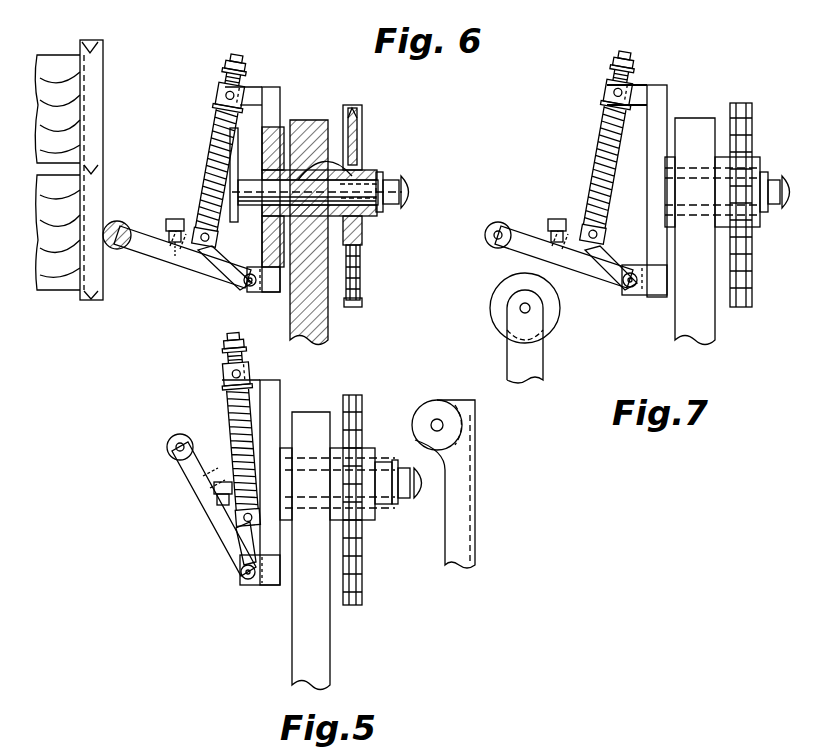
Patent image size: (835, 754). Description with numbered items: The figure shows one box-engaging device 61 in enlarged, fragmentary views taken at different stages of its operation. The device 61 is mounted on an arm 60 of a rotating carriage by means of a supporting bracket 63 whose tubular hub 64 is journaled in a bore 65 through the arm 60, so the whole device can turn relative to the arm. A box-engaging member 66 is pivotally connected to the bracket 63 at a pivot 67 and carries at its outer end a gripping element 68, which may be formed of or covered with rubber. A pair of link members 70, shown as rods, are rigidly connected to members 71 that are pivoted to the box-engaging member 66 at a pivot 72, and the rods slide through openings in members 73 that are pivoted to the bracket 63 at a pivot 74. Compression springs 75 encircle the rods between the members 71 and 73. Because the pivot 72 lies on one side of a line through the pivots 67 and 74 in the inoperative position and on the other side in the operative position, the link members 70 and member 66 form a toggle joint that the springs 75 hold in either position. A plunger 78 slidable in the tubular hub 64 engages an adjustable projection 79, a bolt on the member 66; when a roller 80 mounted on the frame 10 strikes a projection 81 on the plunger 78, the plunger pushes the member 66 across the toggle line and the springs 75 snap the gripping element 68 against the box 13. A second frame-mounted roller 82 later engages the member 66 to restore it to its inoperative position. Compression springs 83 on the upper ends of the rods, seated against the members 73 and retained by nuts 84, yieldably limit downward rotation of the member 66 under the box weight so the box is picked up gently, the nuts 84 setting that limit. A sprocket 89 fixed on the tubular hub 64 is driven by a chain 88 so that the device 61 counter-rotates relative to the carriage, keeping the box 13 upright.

In FIG. 7, the frame 10 is at (500, 345).
In FIG. 5, the frame 10 is at (478, 482).
In FIG. 6, the box 13 is at (93, 110).
In FIG. 6, the arm 60 is at (330, 338).
In FIG. 7, the arm 60 is at (680, 340).
In FIG. 5, the arm 60 is at (332, 648).
In FIG. 6, the box-engaging device 61 is at (316, 98).
In FIG. 7, the box-engaging device 61 is at (674, 96).
In FIG. 5, the box-engaging device 61 is at (246, 592).
In FIG. 6, the supporting bracket 63 is at (280, 103).
In FIG. 7, the supporting bracket 63 is at (660, 103).
In FIG. 5, the supporting bracket 63 is at (280, 396).
In FIG. 6, the tubular hub 64 is at (352, 150).
In FIG. 6, the bore 65 is at (362, 232).
In FIG. 6, the box-engaging member 66 is at (182, 257).
In FIG. 7, the box-engaging member 66 is at (608, 280).
In FIG. 5, the box-engaging member 66 is at (205, 512).
In FIG. 6, the pivot 67 is at (250, 292).
In FIG. 7, the pivot 67 is at (628, 296).
In FIG. 5, the pivot 67 is at (244, 586).
In FIG. 6, the gripping element 68 is at (117, 249).
In FIG. 7, the gripping element 68 is at (492, 247).
In FIG. 5, the gripping element 68 is at (167, 445).
In FIG. 6, the link member 70 is at (236, 58).
In FIG. 7, the link member 70 is at (624, 55).
In FIG. 5, the link member 70 is at (233, 337).
In FIG. 6, the member 71 is at (205, 237).
In FIG. 7, the member 71 is at (593, 234).
In FIG. 5, the member 71 is at (247, 517).
In FIG. 6, the pivot 72 is at (205, 268).
In FIG. 7, the pivot 72 is at (611, 268).
In FIG. 5, the pivot 72 is at (246, 543).
In FIG. 6, the member 73 is at (229, 95).
In FIG. 7, the member 73 is at (617, 92).
In FIG. 5, the member 73 is at (236, 374).
In FIG. 6, the pivot 74 is at (228, 108).
In FIG. 7, the pivot 74 is at (616, 105).
In FIG. 5, the pivot 74 is at (237, 387).
In FIG. 6, the compression spring 75 is at (216, 170).
In FIG. 7, the compression spring 75 is at (604, 167).
In FIG. 5, the compression spring 75 is at (243, 449).
In FIG. 6, the plunger 78 is at (355, 175).
In FIG. 5, the plunger 78 is at (383, 470).
In FIG. 6, the adjustable projection 79 is at (166, 224).
In FIG. 7, the adjustable projection 79 is at (548, 224).
In FIG. 5, the adjustable projection 79 is at (214, 488).
In FIG. 5, the roller 80 is at (432, 400).
In FIG. 6, the projection 81 is at (403, 180).
In FIG. 7, the projection 81 is at (787, 180).
In FIG. 5, the projection 81 is at (420, 498).
In FIG. 7, the roller 82 is at (490, 310).
In FIG. 6, the compression spring 83 is at (233, 77).
In FIG. 7, the compression spring 83 is at (621, 74).
In FIG. 5, the compression spring 83 is at (234, 355).
In FIG. 6, the nut 84 is at (235, 65).
In FIG. 7, the nut 84 is at (623, 62).
In FIG. 5, the nut 84 is at (234, 344).
In FIG. 6, the chain 88 is at (362, 303).
In FIG. 7, the chain 88 is at (763, 303).
In FIG. 5, the chain 88 is at (362, 598).
In FIG. 6, the sprocket 89 is at (361, 264).
In FIG. 7, the sprocket 89 is at (752, 262).
In FIG. 5, the sprocket 89 is at (362, 556).